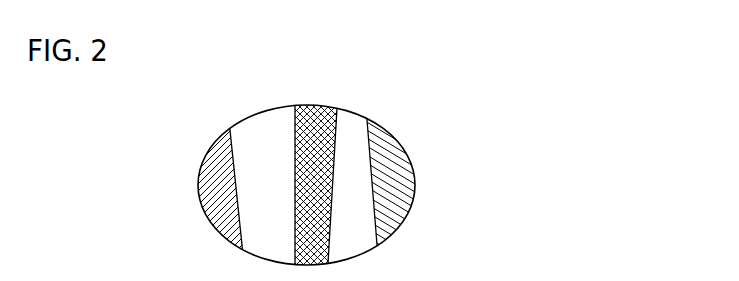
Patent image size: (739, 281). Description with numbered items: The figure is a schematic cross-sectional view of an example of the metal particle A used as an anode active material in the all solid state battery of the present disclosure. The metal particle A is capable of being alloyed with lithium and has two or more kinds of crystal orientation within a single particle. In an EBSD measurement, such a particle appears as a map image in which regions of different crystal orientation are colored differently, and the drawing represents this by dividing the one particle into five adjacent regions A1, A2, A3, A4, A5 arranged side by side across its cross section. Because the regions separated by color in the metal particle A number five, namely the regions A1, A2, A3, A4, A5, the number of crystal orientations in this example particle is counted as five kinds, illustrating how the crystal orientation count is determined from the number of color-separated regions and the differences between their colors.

The metal particle A is at (418, 92).
The region A1 is at (218, 188).
The region A2 is at (262, 185).
The region A3 is at (316, 168).
The region A4 is at (352, 185).
The region A5 is at (390, 181).